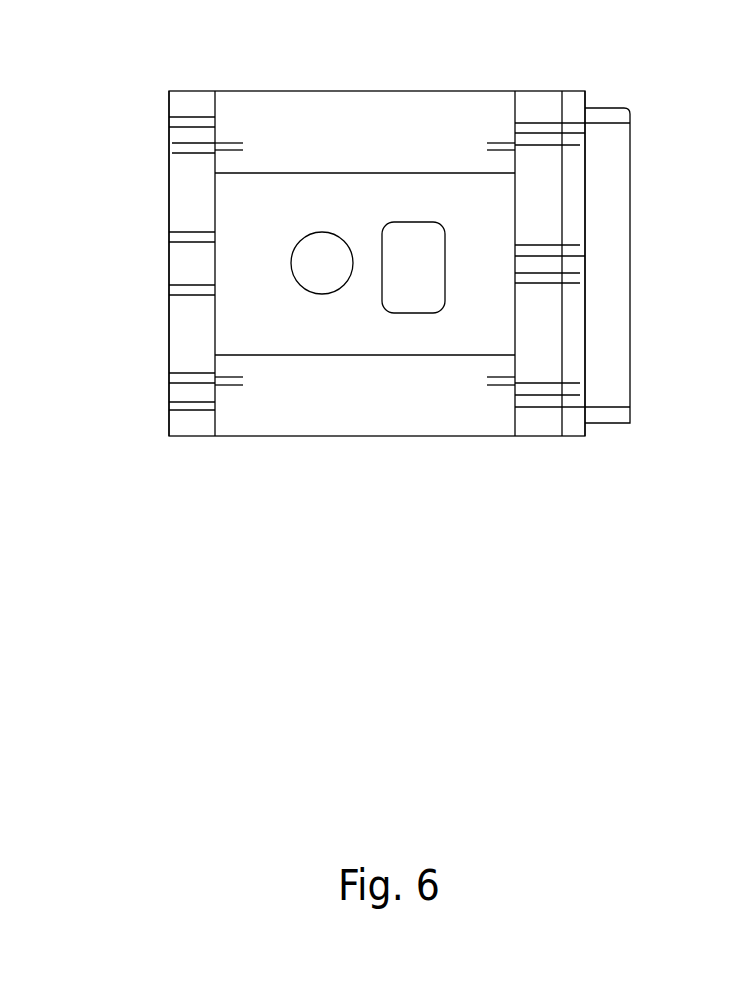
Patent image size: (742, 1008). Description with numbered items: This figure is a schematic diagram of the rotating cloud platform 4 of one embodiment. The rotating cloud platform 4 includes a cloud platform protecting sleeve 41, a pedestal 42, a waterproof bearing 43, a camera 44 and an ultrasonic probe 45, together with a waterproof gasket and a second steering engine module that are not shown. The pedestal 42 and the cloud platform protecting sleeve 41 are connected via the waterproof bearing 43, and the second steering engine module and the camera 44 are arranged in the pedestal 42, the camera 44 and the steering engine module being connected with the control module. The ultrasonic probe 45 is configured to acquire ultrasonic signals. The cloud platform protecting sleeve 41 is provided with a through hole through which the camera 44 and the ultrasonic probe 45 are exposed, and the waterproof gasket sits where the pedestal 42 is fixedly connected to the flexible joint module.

The rotating cloud platform 4 is at (53, 53).
The cloud platform protecting sleeve 41 is at (413, 412).
The pedestal 42 is at (605, 152).
The waterproof bearing 43 is at (188, 142).
The camera 44 is at (430, 222).
The ultrasonic probe 45 is at (328, 233).